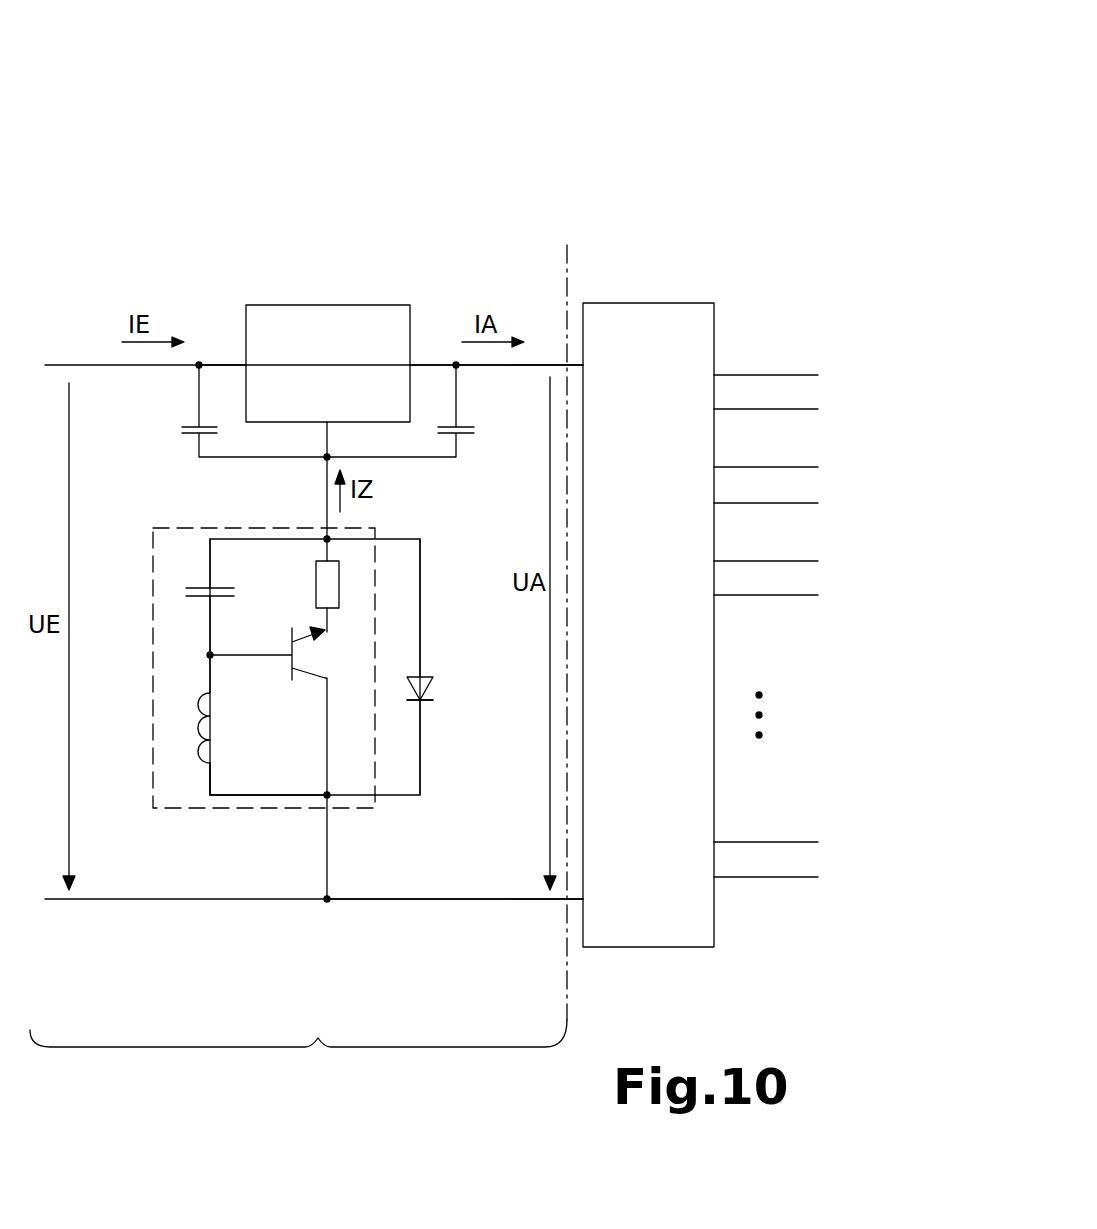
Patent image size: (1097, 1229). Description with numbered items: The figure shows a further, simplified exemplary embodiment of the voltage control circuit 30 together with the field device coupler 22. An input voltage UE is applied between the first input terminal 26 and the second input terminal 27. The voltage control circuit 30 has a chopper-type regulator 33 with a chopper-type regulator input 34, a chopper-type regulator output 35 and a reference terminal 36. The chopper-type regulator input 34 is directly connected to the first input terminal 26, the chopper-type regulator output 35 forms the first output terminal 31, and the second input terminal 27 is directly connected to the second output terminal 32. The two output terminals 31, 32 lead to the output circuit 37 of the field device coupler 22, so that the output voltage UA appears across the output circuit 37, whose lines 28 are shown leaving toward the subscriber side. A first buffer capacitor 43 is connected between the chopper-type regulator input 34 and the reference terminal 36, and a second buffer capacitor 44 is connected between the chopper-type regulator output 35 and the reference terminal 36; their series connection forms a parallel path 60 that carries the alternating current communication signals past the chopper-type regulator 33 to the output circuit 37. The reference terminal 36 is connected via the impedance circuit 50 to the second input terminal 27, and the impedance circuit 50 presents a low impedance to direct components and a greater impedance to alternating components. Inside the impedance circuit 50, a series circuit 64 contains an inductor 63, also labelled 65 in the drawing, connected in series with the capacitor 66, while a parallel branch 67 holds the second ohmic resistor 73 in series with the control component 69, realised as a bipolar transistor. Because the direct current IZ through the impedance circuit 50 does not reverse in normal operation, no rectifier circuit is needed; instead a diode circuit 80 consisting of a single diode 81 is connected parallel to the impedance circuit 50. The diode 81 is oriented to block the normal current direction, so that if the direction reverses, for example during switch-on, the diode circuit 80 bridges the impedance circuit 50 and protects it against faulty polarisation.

The field device coupler 22 is at (738, 133).
The first input terminal 26 is at (82, 364).
The second input terminal 27 is at (78, 900).
The sensor connection lines 28 is at (707, 364).
The voltage control circuit 30 is at (298, 1056).
The first output terminal 31 is at (536, 364).
The second output terminal 32 is at (510, 900).
The chopper-type regulator 33 is at (341, 310).
The chopper-type regulator input 34 is at (244, 364).
The chopper-type regulator output 35 is at (412, 364).
The reference terminal 36 is at (328, 422).
The output circuit 37 is at (653, 325).
The first buffer capacitor 43 is at (195, 440).
The second buffer capacitor 44 is at (462, 440).
The impedance circuit 50 is at (352, 808).
The parallel path 60 is at (305, 437).
The inductor 63 is at (200, 722).
The series circuit 64 is at (210, 790).
The coil 65 is at (145, 733).
The capacitor 66 is at (204, 586).
The parallel branch 67 is at (318, 700).
The control component 69 is at (280, 632).
The second ohmic resistor 73 is at (335, 582).
The diode circuit 80 is at (422, 660).
The diode 81 is at (428, 694).